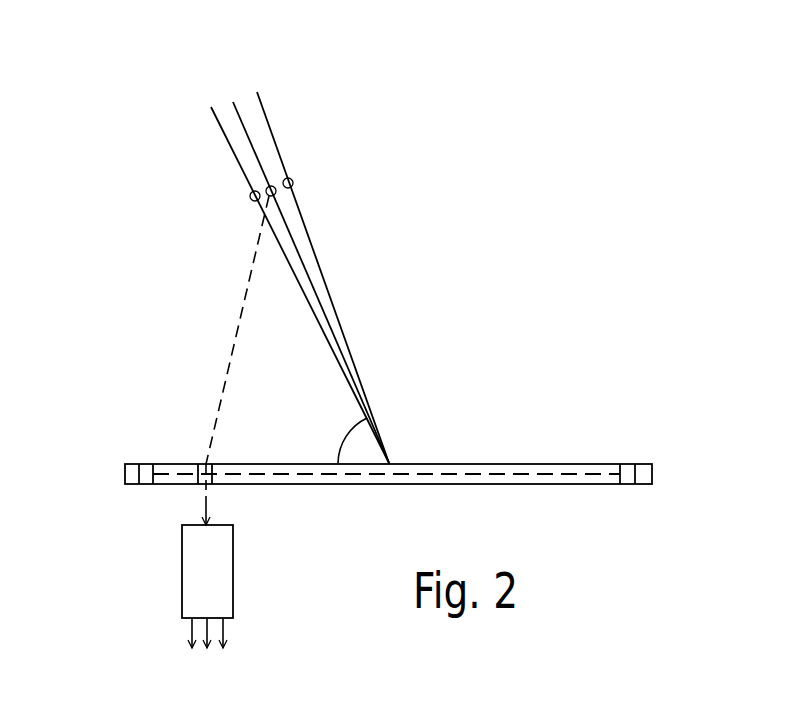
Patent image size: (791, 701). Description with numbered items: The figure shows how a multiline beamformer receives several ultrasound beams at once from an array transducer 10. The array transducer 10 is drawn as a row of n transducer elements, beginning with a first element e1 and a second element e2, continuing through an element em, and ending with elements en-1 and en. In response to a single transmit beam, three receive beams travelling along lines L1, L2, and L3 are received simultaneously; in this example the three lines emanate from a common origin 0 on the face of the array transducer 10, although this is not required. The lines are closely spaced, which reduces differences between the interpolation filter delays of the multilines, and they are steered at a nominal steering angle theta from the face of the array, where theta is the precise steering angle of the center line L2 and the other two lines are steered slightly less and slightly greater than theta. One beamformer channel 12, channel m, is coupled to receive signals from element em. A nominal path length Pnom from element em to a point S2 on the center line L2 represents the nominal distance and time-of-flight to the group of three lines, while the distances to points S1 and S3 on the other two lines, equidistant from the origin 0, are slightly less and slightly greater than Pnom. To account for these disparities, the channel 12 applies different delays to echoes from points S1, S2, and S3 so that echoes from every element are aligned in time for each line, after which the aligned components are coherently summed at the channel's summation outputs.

The array transducer 10 is at (527, 464).
The beamformer channel 12 is at (234, 565).
The common origin 0 is at (391, 456).
The first receive line L1 is at (228, 142).
The center line L2 is at (238, 112).
The third receive line L3 is at (267, 117).
The point on first line S1 is at (250, 197).
The point on center line S2 is at (270, 186).
The point on third line S3 is at (293, 183).
The first transducer element e1 is at (126, 480).
The second transducer element e2 is at (141, 464).
The transducer element m em is at (198, 464).
The second-to-last transducer element en-1 is at (623, 464).
The last transducer element en is at (650, 463).
The nominal path length Pnom is at (232, 360).
The nominal steering angle theta is at (345, 437).